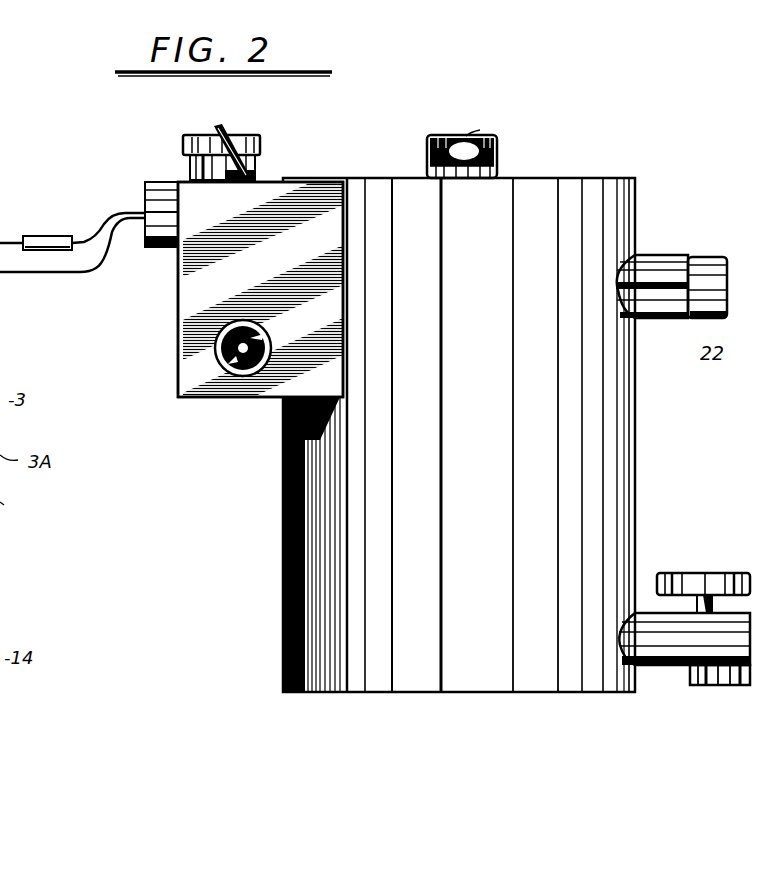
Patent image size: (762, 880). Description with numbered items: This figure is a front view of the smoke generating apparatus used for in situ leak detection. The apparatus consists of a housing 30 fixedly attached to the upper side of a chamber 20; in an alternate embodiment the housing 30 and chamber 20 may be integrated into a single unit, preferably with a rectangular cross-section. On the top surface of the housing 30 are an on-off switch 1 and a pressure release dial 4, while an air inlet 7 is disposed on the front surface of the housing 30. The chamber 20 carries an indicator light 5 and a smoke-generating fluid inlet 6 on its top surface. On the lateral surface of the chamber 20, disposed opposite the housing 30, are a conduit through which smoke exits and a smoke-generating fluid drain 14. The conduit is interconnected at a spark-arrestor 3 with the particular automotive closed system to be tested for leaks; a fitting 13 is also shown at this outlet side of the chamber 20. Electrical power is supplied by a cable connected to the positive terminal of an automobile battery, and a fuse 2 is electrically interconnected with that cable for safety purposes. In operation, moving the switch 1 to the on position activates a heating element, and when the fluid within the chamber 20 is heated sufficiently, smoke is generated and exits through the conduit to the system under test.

The on-off switch 1 is at (228, 130).
The fuse 2 is at (34, 236).
The spark-arrestor 3 is at (700, 258).
The pressure release dial 4 is at (184, 146).
The indicator light 5 is at (491, 150).
The smoke-generating fluid inlet 6 is at (465, 136).
The air inlet 7 is at (236, 372).
The outlet pipe 13 is at (646, 257).
The smoke-generating fluid drain 14 is at (710, 574).
The chamber 20 is at (636, 456).
The housing 30 is at (178, 330).